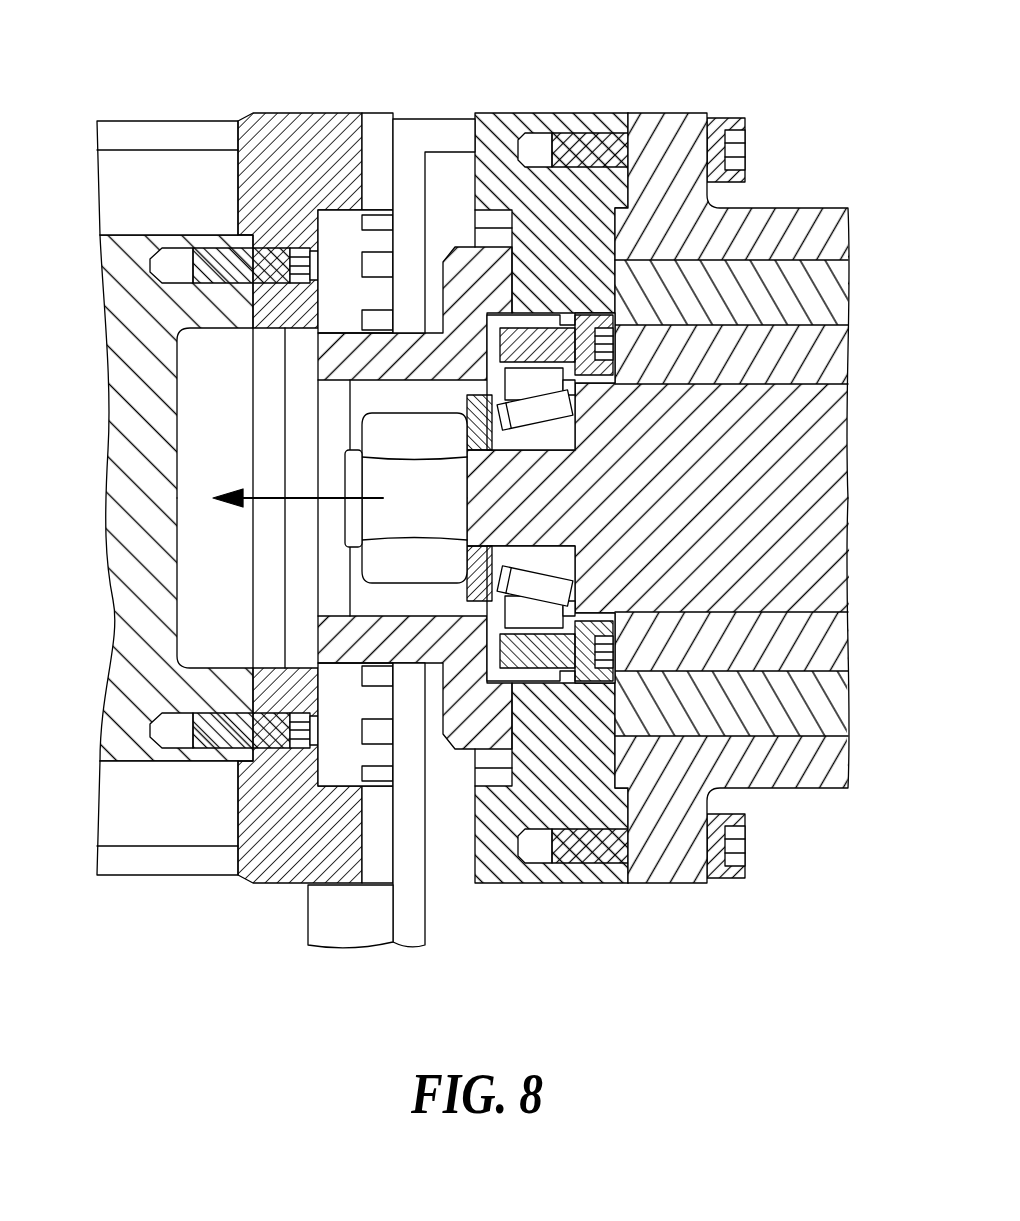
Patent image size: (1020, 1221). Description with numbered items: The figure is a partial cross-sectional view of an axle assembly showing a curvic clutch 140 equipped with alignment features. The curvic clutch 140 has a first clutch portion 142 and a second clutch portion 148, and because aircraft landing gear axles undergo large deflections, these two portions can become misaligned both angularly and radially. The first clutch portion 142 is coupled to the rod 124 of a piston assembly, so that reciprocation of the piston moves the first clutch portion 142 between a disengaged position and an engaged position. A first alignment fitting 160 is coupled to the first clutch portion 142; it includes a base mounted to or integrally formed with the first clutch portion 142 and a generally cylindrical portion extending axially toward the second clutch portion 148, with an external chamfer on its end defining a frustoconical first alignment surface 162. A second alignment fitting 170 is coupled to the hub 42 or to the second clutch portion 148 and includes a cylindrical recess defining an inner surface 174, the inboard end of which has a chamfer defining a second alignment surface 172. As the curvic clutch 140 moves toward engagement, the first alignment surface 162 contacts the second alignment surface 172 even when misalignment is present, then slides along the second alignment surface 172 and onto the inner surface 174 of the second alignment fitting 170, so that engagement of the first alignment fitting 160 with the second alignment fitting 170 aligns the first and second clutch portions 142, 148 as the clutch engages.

The hub 42 is at (160, 120).
The second alignment fitting 170 is at (275, 113).
The first alignment surface 162 is at (338, 330).
The curvic clutch 140 is at (405, 114).
The first alignment fitting 160 is at (436, 330).
The inner surface 174 is at (218, 330).
The second alignment surface 172 is at (305, 330).
The rod 124 is at (840, 495).
The second clutch portion 148 is at (387, 756).
The first clutch portion 142 is at (480, 767).